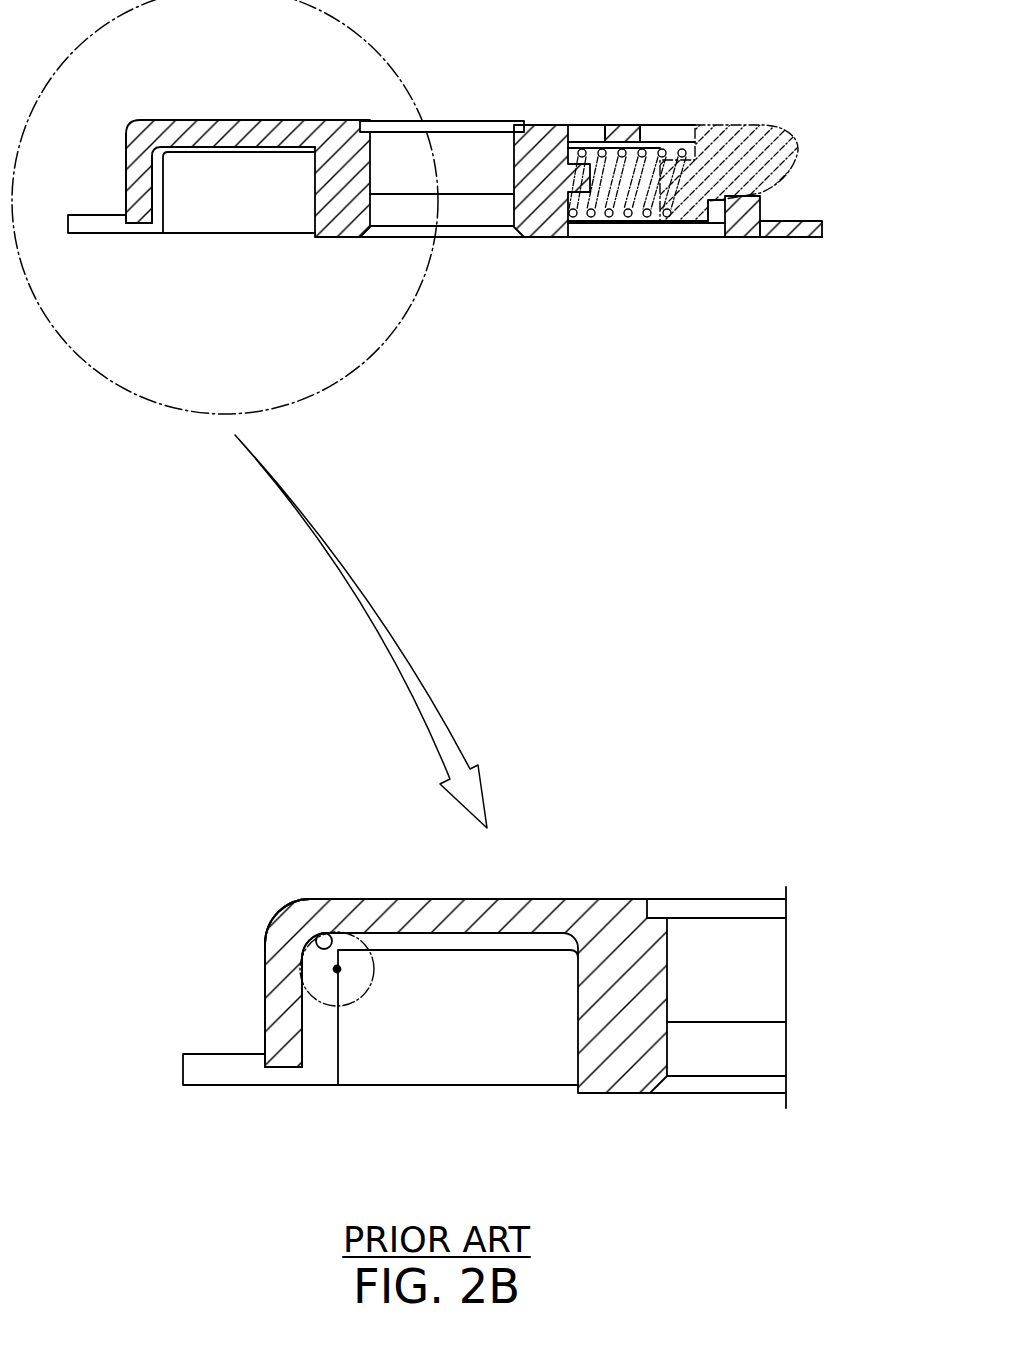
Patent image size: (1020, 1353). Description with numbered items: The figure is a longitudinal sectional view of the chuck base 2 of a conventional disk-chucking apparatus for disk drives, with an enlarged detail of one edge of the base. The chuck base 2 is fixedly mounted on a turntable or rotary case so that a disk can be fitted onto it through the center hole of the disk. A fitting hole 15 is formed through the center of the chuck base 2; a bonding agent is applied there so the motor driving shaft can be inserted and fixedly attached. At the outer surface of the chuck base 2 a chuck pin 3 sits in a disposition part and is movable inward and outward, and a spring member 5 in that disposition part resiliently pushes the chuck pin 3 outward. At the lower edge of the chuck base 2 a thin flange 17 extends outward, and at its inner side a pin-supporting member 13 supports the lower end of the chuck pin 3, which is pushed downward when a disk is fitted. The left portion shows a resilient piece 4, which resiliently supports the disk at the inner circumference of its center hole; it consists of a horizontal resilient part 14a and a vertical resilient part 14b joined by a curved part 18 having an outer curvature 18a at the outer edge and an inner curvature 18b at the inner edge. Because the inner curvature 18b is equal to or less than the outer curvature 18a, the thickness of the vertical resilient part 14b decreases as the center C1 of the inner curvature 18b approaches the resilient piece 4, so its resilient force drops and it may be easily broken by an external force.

The chuck base 2 is at (688, 168).
The chuck pin 3 is at (788, 160).
The resilient piece 4 is at (114, 123).
The spring member 5 is at (658, 152).
The pin-supporting member 13 is at (741, 215).
The horizontal resilient part 14a is at (222, 133).
The vertical resilient part 14b is at (143, 190).
The fitting hole 15 is at (511, 152).
The flange 17 is at (813, 238).
The curved part 18 is at (295, 933).
The outer curvature 18a is at (273, 918).
The inner curvature 18b is at (323, 935).
The center of the inner curvature C1 is at (337, 969).